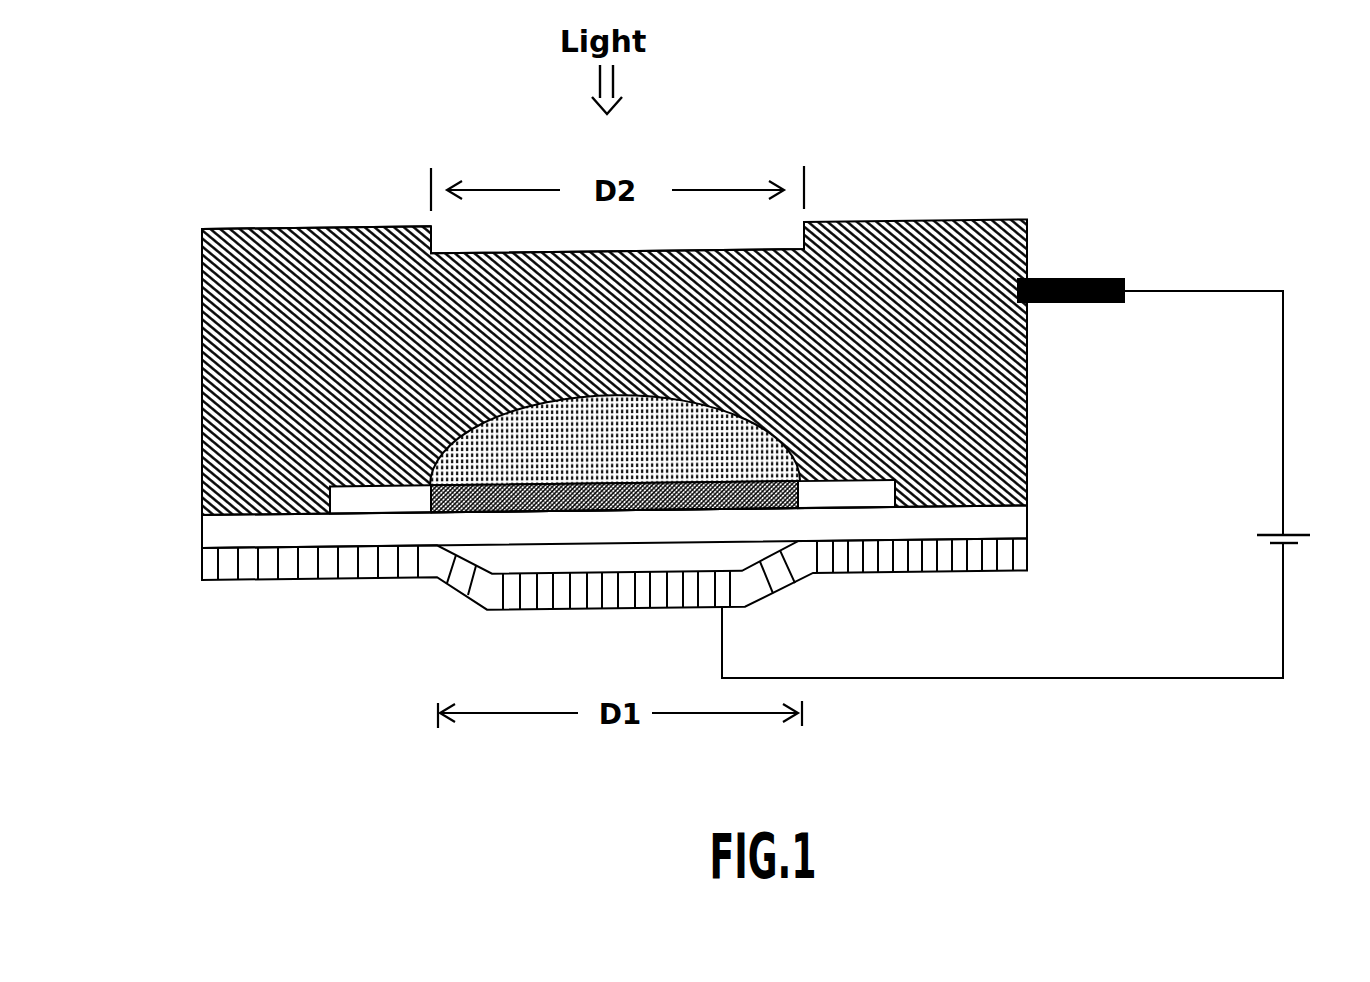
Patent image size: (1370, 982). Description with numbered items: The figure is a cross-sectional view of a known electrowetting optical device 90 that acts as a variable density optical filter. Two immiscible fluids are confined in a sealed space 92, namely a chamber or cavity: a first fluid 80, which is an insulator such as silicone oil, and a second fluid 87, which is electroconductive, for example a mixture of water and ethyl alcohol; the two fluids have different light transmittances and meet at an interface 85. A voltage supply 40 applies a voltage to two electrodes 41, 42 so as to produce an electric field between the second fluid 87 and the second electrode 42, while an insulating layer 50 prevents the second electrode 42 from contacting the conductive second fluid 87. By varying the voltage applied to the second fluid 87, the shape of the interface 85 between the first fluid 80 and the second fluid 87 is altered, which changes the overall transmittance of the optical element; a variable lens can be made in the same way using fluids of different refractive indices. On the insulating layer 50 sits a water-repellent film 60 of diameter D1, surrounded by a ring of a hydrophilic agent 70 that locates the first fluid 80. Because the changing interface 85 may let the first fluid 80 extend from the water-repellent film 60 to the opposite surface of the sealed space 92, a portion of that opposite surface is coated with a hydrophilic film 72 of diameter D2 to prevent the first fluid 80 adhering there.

The voltage supply 40 is at (1298, 532).
The first electrode 41 is at (1107, 278).
The second electrode 42 is at (750, 602).
The insulating layer 50 is at (1018, 519).
The water-repellent film 60 is at (475, 513).
The hydrophilic agent 70 is at (383, 497).
The hydrophilic film 72 is at (732, 237).
The first fluid 80 is at (722, 457).
The interface 85 is at (447, 446).
The second fluid 87 is at (905, 250).
The optical device 90 is at (1137, 752).
The sealed space 92 is at (261, 229).